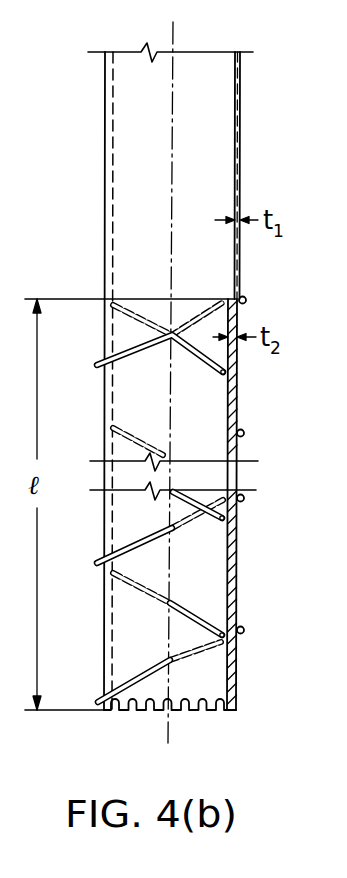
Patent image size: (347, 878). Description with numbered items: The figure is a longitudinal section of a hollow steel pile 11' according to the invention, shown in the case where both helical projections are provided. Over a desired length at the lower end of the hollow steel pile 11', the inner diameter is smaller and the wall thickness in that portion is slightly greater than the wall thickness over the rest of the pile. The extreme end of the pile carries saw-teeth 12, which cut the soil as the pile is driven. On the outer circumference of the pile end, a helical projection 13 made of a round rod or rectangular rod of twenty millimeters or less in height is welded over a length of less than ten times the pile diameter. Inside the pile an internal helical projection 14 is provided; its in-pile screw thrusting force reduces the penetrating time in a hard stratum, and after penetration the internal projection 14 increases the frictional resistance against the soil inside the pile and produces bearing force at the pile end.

The hollow steel pile 11' is at (211, 381).
The saw-teeth 12 is at (187, 713).
The helical projection 13 is at (244, 629).
The helical projection 14 is at (116, 572).